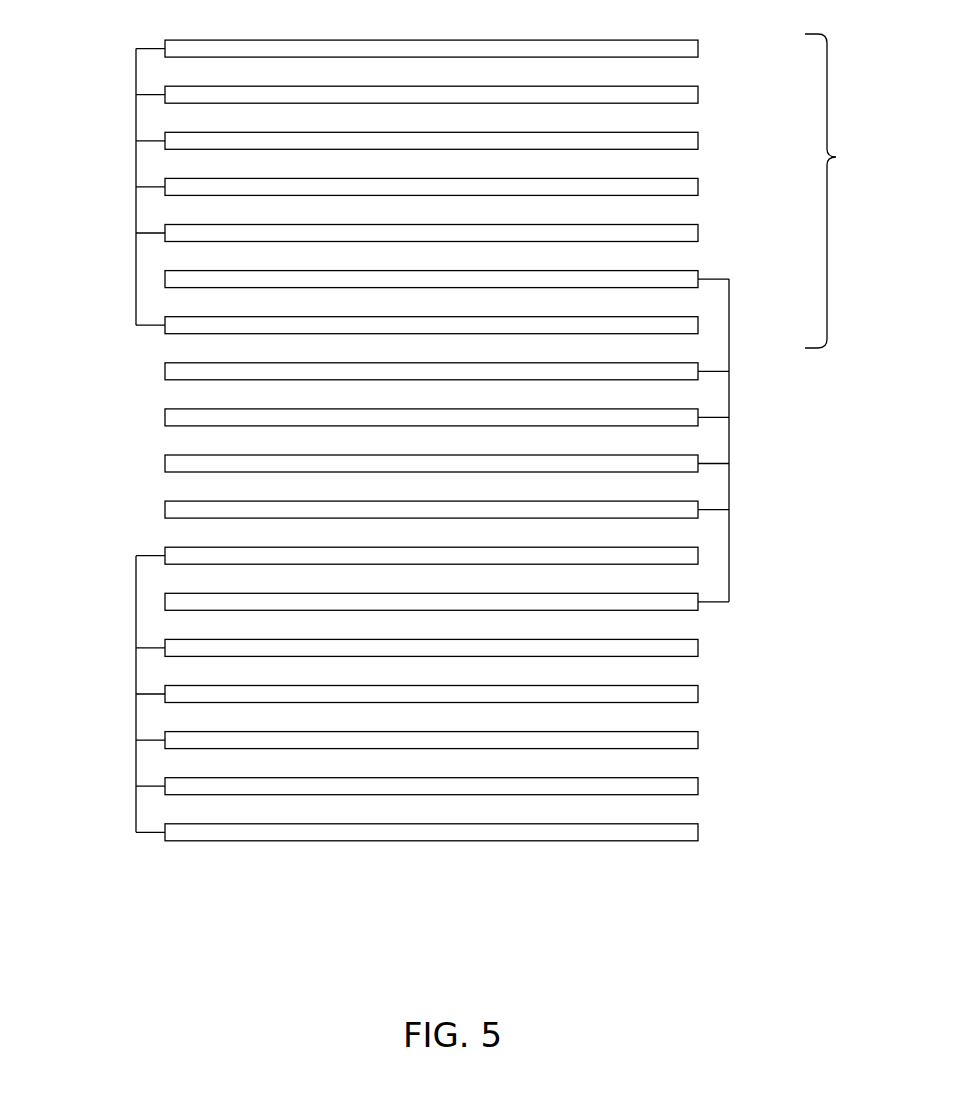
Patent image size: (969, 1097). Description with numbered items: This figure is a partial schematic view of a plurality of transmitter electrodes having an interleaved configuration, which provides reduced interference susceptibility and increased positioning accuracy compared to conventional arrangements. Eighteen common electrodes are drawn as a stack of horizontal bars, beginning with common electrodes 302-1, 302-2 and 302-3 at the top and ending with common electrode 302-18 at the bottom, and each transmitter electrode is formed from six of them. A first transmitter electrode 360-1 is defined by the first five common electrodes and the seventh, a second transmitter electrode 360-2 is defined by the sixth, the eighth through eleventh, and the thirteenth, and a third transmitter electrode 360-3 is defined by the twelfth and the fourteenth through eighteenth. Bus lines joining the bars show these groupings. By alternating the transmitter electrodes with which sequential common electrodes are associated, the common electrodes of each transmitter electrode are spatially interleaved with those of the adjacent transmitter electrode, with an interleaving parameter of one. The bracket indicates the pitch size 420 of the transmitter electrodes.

The common electrode 302-1 is at (698, 47).
The common electrode 302-2 is at (698, 93).
The common electrode 302-3 is at (698, 139).
The common electrode 302-18 is at (698, 837).
The first transmitter electrode 360-1 is at (136, 187).
The second transmitter electrode 360-2 is at (729, 417).
The third transmitter electrode 360-3 is at (136, 694).
The pitch size 420 is at (845, 191).